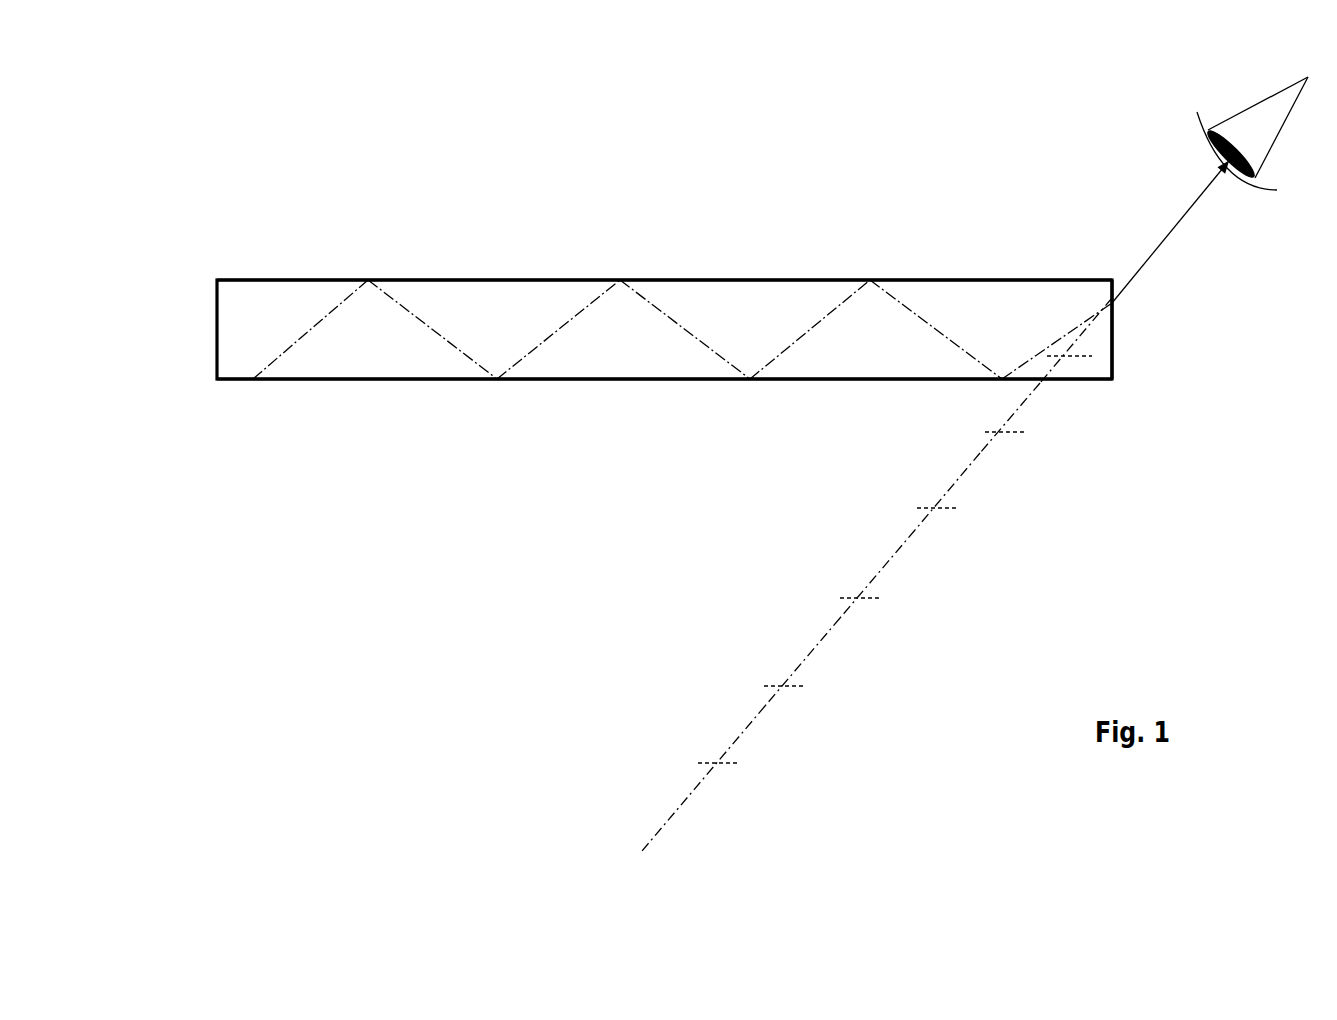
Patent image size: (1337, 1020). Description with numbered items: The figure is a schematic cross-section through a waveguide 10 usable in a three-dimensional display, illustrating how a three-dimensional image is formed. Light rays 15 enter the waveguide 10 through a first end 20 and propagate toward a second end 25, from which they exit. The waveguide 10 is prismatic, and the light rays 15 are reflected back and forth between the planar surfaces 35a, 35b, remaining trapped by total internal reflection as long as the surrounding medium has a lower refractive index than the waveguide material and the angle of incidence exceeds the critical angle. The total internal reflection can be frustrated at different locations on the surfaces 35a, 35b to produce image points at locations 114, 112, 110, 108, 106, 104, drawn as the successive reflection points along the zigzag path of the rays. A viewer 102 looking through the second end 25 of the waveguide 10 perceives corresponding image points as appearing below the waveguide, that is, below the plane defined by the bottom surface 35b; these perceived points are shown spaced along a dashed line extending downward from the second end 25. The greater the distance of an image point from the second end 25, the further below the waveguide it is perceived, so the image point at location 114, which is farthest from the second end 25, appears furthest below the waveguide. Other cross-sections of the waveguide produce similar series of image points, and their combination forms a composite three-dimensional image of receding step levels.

The waveguide 10 is at (255, 198).
The first end 20 is at (217, 314).
The planar surface 35a is at (483, 278).
The planar surface 35b is at (393, 381).
The light rays 15 is at (298, 340).
The image point location 114 is at (418, 305).
The image point location 112 is at (549, 354).
The image point location 110 is at (670, 305).
The image point location 108 is at (796, 357).
The image point location 106 is at (926, 305).
The image point location 104 is at (1032, 362).
The second end 25 is at (1115, 311).
The viewer 102 is at (1252, 122).